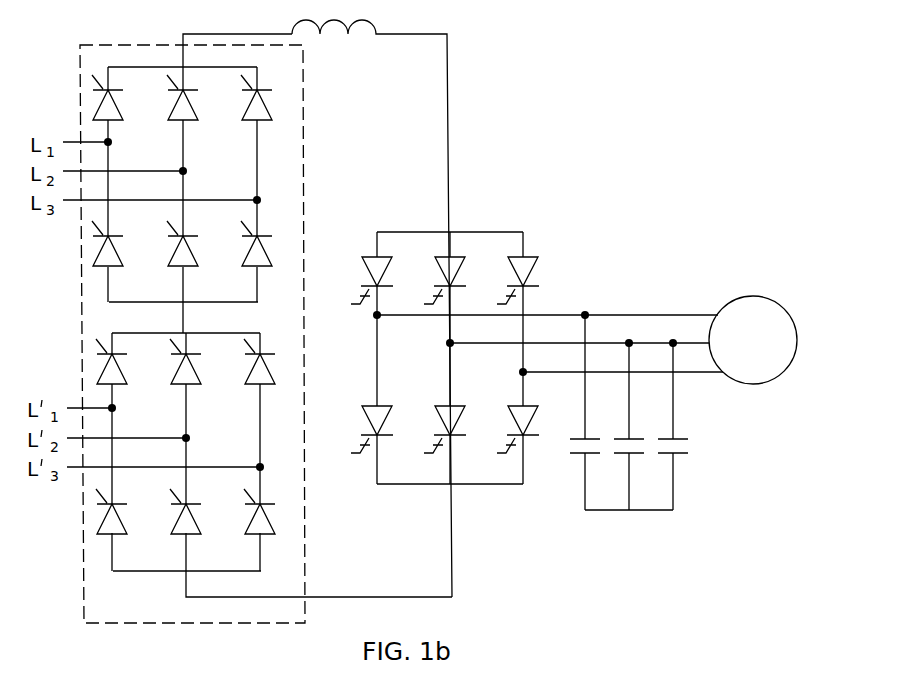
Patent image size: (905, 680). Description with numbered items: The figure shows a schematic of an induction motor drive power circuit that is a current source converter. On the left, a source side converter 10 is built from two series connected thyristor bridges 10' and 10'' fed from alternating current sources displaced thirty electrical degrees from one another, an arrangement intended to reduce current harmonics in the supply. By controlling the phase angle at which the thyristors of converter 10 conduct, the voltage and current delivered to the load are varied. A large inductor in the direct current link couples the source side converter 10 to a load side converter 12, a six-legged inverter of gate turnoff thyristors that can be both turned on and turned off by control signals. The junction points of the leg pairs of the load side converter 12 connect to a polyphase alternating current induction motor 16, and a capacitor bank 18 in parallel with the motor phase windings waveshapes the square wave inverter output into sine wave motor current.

The source side converter 10 is at (240, 334).
The first series connected bridge 10' is at (226, 183).
The second series connected bridge 10'' is at (274, 465).
The load side converter 12 is at (503, 222).
The polyphase alternating current induction motor 16 is at (770, 297).
The capacitor bank 18 is at (708, 459).